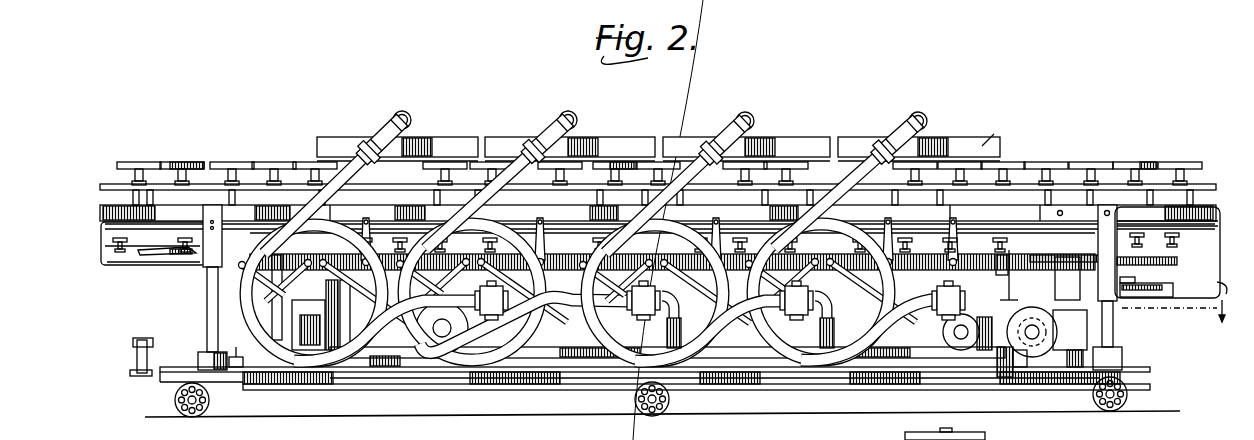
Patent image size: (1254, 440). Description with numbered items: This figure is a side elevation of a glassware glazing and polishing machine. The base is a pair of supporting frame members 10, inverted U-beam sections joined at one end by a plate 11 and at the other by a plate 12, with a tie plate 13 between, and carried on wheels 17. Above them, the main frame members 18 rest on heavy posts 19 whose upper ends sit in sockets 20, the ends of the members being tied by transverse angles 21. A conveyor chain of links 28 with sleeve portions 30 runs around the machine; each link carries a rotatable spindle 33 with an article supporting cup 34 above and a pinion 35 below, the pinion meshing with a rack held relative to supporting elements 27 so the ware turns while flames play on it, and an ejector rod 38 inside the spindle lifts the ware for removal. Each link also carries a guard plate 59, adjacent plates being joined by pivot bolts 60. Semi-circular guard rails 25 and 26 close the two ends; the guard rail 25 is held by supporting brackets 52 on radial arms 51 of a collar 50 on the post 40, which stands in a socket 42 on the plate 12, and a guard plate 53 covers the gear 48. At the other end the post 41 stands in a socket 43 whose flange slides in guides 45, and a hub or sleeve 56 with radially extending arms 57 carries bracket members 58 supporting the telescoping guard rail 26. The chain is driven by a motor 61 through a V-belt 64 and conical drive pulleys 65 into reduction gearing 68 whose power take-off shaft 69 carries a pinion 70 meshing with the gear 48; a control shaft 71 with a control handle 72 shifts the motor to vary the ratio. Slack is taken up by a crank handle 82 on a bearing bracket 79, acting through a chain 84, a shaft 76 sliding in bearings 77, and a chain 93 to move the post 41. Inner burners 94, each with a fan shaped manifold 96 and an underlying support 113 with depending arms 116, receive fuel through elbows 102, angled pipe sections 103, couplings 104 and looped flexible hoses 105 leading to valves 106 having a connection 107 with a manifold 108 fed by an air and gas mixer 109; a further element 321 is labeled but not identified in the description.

The supporting frame members 10 is at (1008, 384).
The plate 11 is at (160, 384).
The plate 12 is at (1135, 368).
The tie plate 13 is at (1234, 320).
The wheels 17 is at (210, 406).
The main frame members 18 is at (233, 351).
The posts 19 is at (700, 308).
The sockets 20 is at (835, 292).
The transverse angles 21 is at (262, 281).
The guard rail 25 is at (1221, 235).
The guard rail 26 is at (100, 214).
The supporting elements 27 is at (672, 244).
The links 28 is at (1000, 221).
The sleeve portion 30 is at (388, 221).
The spindle 33 is at (108, 425).
The article supporting member or cup 34 is at (150, 162).
The pinion 35 is at (559, 251).
The ejector rod 38 is at (145, 264).
The post 40 is at (1113, 328).
The post 41 is at (207, 327).
The socket 42 is at (1122, 347).
The socket 43 is at (202, 360).
The guides 45 is at (225, 385).
The gear 48 is at (1154, 242).
The collar 50 is at (1135, 279).
The radial arms 51 is at (1159, 286).
The supporting brackets 52 is at (1184, 302).
The guard plate 53 is at (1159, 267).
The hub or sleeve 56 is at (208, 285).
The radially extending arms 57 is at (195, 260).
The bracket members 58 is at (100, 262).
The guard plate 59 is at (118, 185).
The pivot bolts 60 is at (213, 184).
The motor 61 is at (704, 328).
The V-belt 64 is at (986, 274).
The conical drive pulleys 65 is at (1033, 308).
The reduction gearing 68 is at (1033, 376).
The power take-off shaft 69 is at (1070, 338).
The pinion 70 is at (1065, 268).
The control shaft 71 is at (396, 384).
The control handle 72 is at (143, 338).
The shaft 76 is at (385, 353).
The bearings 77 is at (385, 384).
The bearing bracket 79 is at (305, 337).
The crank handle 82 is at (291, 302).
The chain 84 is at (315, 315).
The chain 93 is at (335, 288).
The inner burners 94 is at (462, 137).
The manifold 96 is at (330, 140).
The elbows 102 is at (412, 120).
The pipe sections 103 is at (375, 130).
The couplings 104 is at (358, 150).
The flexible hoses 105 is at (318, 162).
The valves 106 is at (512, 285).
The connection 107 is at (662, 335).
The manifold 108 is at (560, 392).
The air and gas mixer 109 is at (418, 388).
The support 113 is at (994, 134).
The depending arms 116 is at (797, 121).
The shaft 321 is at (1013, 275).